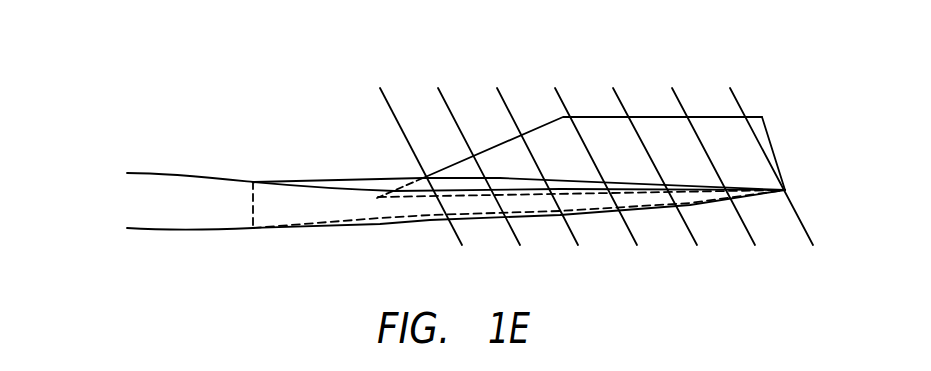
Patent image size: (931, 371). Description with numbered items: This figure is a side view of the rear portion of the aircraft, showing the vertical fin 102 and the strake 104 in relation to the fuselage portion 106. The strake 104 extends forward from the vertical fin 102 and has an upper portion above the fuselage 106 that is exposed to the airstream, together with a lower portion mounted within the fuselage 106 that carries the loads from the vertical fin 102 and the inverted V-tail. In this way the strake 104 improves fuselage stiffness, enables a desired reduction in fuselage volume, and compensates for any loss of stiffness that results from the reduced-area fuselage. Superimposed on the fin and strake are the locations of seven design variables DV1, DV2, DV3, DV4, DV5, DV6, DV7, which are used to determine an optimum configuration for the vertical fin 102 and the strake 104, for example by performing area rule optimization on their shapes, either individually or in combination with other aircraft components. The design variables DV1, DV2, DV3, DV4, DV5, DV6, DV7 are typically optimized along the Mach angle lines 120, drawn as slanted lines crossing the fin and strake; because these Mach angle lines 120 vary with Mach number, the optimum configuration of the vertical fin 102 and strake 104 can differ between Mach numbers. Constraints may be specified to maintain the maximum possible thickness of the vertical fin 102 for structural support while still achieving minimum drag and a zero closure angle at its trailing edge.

The vertical fin 102 is at (752, 113).
The strake 104 is at (348, 178).
The fuselage portion 106 is at (152, 173).
The Mach angle lines 120 is at (563, 98).
The design variable DV1 is at (784, 179).
The design variable DV2 is at (723, 179).
The design variable DV3 is at (665, 179).
The design variable DV4 is at (607, 179).
The design variable DV5 is at (551, 179).
The design variable DV6 is at (491, 179).
The design variable DV7 is at (433, 179).